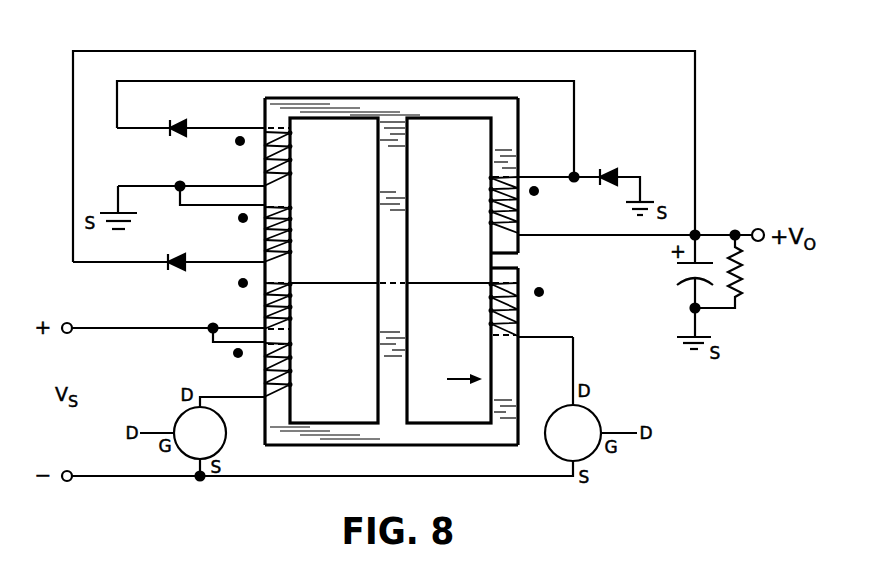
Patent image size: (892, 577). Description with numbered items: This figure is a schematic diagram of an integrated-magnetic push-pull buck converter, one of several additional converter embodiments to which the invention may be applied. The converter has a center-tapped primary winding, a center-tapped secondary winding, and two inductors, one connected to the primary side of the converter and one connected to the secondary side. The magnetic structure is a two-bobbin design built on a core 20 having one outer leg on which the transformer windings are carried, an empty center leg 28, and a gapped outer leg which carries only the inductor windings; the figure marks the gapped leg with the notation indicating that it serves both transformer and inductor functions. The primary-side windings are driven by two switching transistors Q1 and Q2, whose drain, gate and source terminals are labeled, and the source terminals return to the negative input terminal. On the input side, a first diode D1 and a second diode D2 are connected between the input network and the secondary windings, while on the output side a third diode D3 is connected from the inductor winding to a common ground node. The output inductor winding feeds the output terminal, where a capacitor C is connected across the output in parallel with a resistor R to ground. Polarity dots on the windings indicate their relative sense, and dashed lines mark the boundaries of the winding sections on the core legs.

The integrated magnetic core assembly (transformer and inductor) 20 is at (437, 108).
The center leg of core 28 is at (400, 240).
The diode D1 is at (190, 118).
The diode D2 is at (168, 253).
The diode D3 is at (581, 176).
The transistor Q1 is at (202, 436).
The transistor Q2 is at (591, 399).
The capacitor C is at (687, 286).
The load resistor R is at (728, 271).